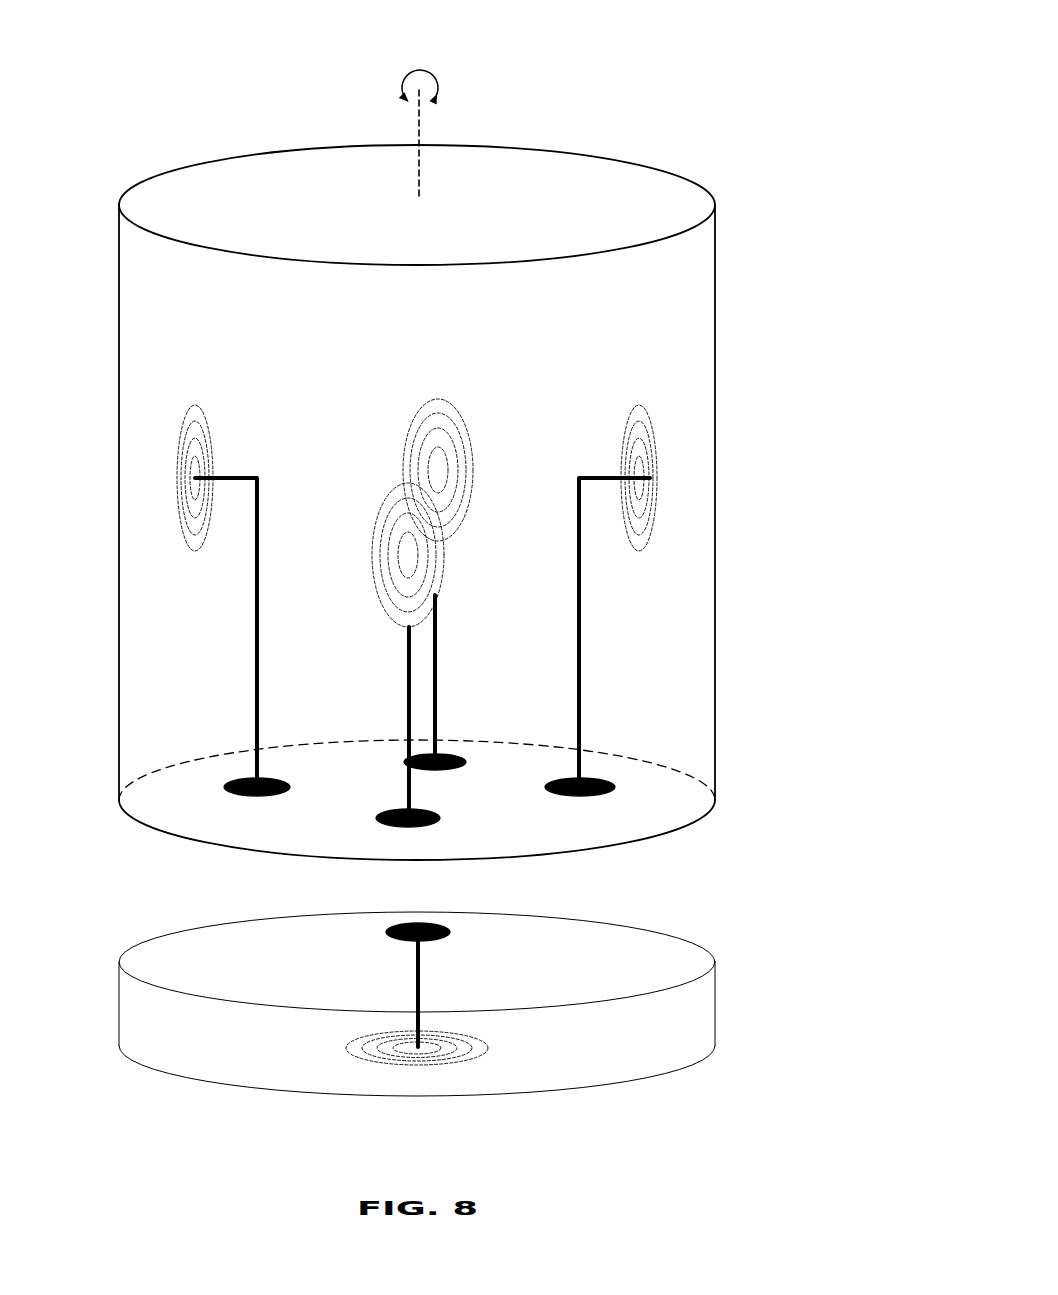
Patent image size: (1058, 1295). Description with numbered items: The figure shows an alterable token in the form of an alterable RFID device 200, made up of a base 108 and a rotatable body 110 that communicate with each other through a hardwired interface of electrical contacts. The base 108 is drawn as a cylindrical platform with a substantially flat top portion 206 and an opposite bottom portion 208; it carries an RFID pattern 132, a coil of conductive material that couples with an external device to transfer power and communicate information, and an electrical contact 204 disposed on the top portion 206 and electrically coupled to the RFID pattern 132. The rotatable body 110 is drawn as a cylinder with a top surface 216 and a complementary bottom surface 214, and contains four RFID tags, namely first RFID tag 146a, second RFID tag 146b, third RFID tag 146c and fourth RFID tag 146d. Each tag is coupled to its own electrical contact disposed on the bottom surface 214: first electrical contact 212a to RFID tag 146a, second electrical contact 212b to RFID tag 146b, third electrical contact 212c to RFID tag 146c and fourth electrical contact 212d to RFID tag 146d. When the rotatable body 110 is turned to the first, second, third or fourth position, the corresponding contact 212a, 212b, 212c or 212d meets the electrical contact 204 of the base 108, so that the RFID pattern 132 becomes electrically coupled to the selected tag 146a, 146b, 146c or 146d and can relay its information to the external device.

The alterable RFID device 200 is at (681, 48).
The rotatable body 110 is at (715, 695).
The top surface 216 is at (195, 176).
The bottom surface 214 is at (145, 849).
The first RFID tag 146a is at (655, 495).
The second RFID tag 146b is at (435, 442).
The third RFID tag 146c is at (180, 440).
The fourth RFID tag 146d is at (443, 570).
The first electrical contact 212a is at (615, 783).
The second electrical contact 212b is at (455, 755).
The third electrical contact 212c is at (222, 785).
The fourth electrical contact 212d is at (445, 817).
The base 108 is at (715, 998).
The top portion 206 is at (145, 949).
The bottom portion 208 is at (145, 1076).
The electrical contact 204 is at (452, 932).
The RFID pattern 132 is at (490, 1047).